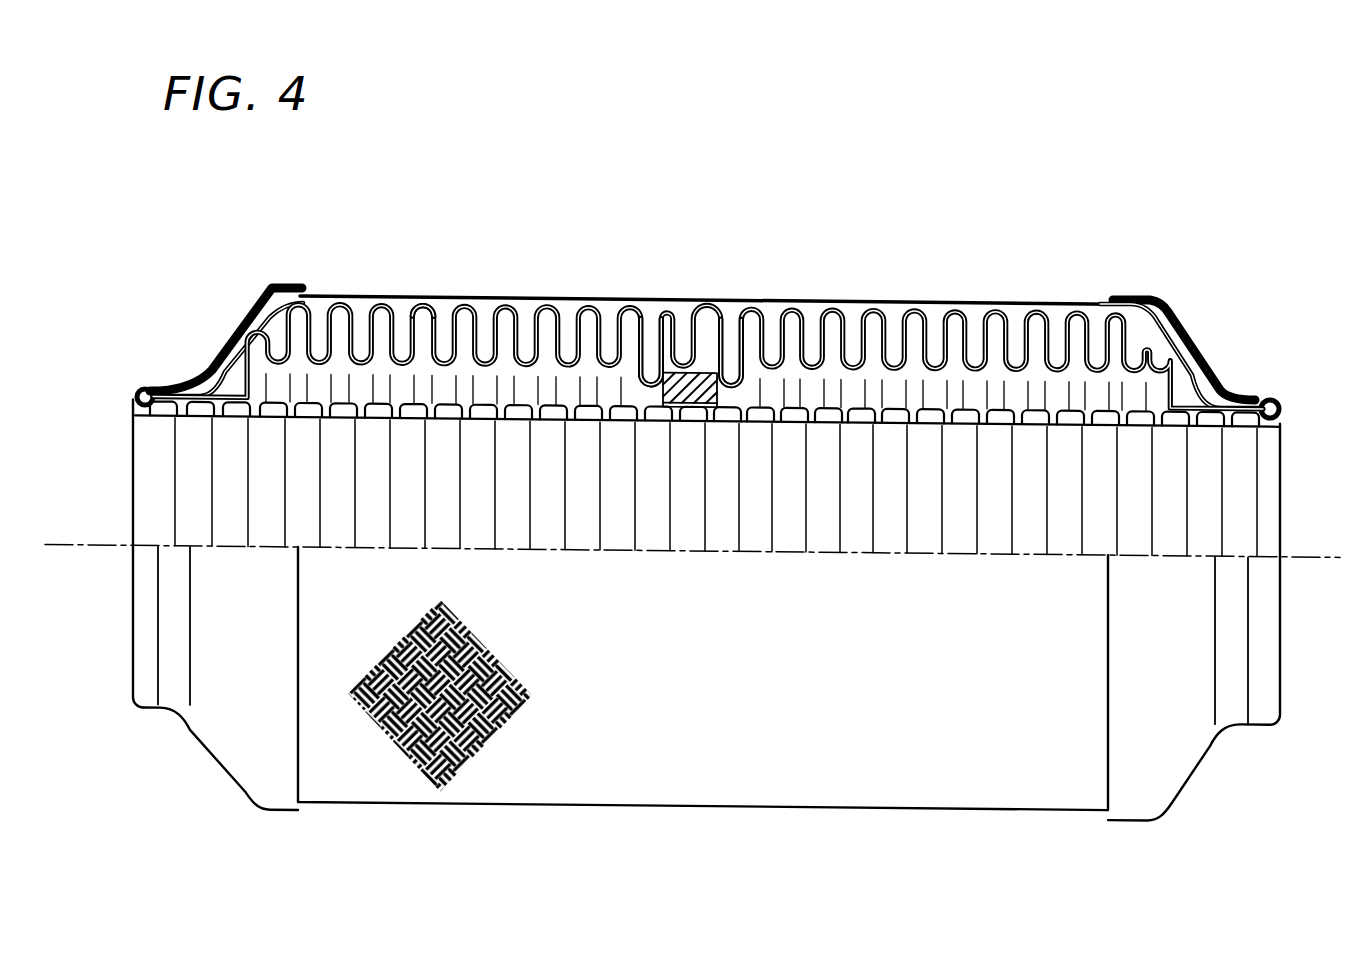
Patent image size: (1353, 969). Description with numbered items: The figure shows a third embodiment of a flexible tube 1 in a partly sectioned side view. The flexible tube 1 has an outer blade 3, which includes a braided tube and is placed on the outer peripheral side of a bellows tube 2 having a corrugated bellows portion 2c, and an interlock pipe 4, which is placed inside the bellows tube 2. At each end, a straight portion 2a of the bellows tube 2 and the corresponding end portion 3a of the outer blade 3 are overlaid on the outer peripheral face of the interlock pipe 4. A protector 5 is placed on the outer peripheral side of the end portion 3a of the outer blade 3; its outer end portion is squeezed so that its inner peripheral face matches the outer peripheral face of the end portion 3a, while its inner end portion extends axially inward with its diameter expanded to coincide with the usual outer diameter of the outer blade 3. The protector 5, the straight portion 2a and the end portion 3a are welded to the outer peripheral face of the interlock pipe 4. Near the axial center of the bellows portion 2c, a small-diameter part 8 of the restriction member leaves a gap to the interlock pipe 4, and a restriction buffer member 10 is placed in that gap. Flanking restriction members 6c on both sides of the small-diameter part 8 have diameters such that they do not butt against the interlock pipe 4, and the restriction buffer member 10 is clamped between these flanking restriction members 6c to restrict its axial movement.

The flexible tube 1 is at (915, 268).
The bellows tube 2 is at (530, 300).
The straight portion 2a is at (222, 360).
The bellows portion 2c is at (413, 303).
The outer blade 3 is at (800, 297).
The end portion 3a is at (207, 367).
The interlock pipe 4 is at (925, 540).
The protector 5 is at (1172, 300).
The flanking restriction member 6c is at (641, 362).
The small-diameter part 8 is at (688, 372).
The restriction buffer member 10 is at (690, 410).